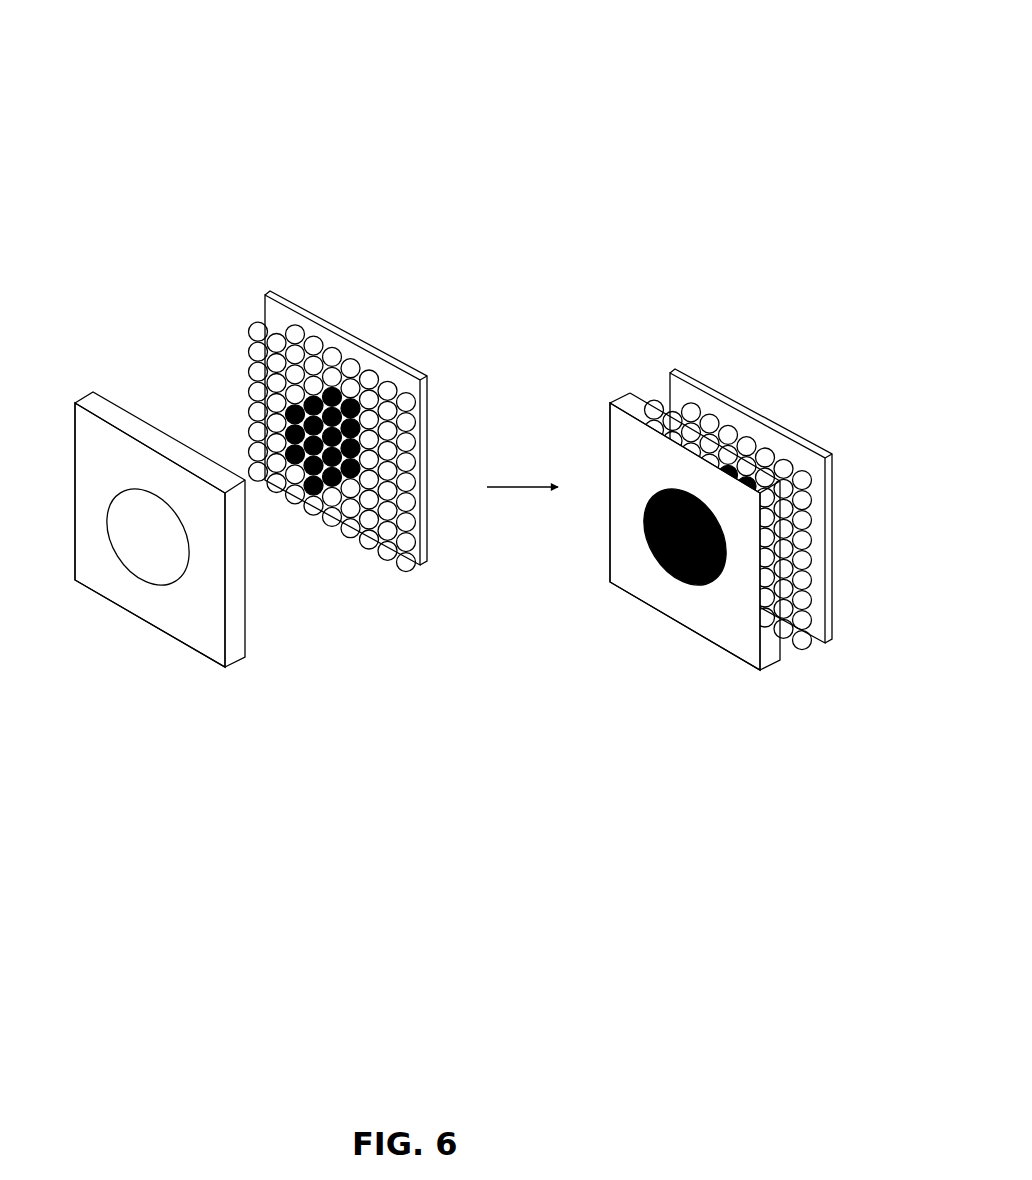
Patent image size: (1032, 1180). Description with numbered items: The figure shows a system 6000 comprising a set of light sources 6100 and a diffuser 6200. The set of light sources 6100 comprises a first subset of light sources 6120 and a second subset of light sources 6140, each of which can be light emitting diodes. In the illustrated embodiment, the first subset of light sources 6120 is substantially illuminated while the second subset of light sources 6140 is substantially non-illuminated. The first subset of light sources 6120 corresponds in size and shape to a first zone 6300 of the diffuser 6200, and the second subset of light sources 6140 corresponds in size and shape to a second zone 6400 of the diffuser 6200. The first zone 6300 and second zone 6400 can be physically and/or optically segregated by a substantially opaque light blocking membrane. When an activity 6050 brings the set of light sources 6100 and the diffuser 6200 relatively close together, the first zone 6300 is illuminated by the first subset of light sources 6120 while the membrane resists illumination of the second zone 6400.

The system 6000 is at (502, 28).
The activity 6050 is at (522, 464).
The set of light sources 6100 is at (459, 424).
The first subset of light sources 6120 is at (530, 424).
The second subset of light sources 6140 is at (323, 456).
The diffuser 6200 is at (152, 628).
The first zone 6300 is at (205, 578).
The second zone 6400 is at (145, 535).